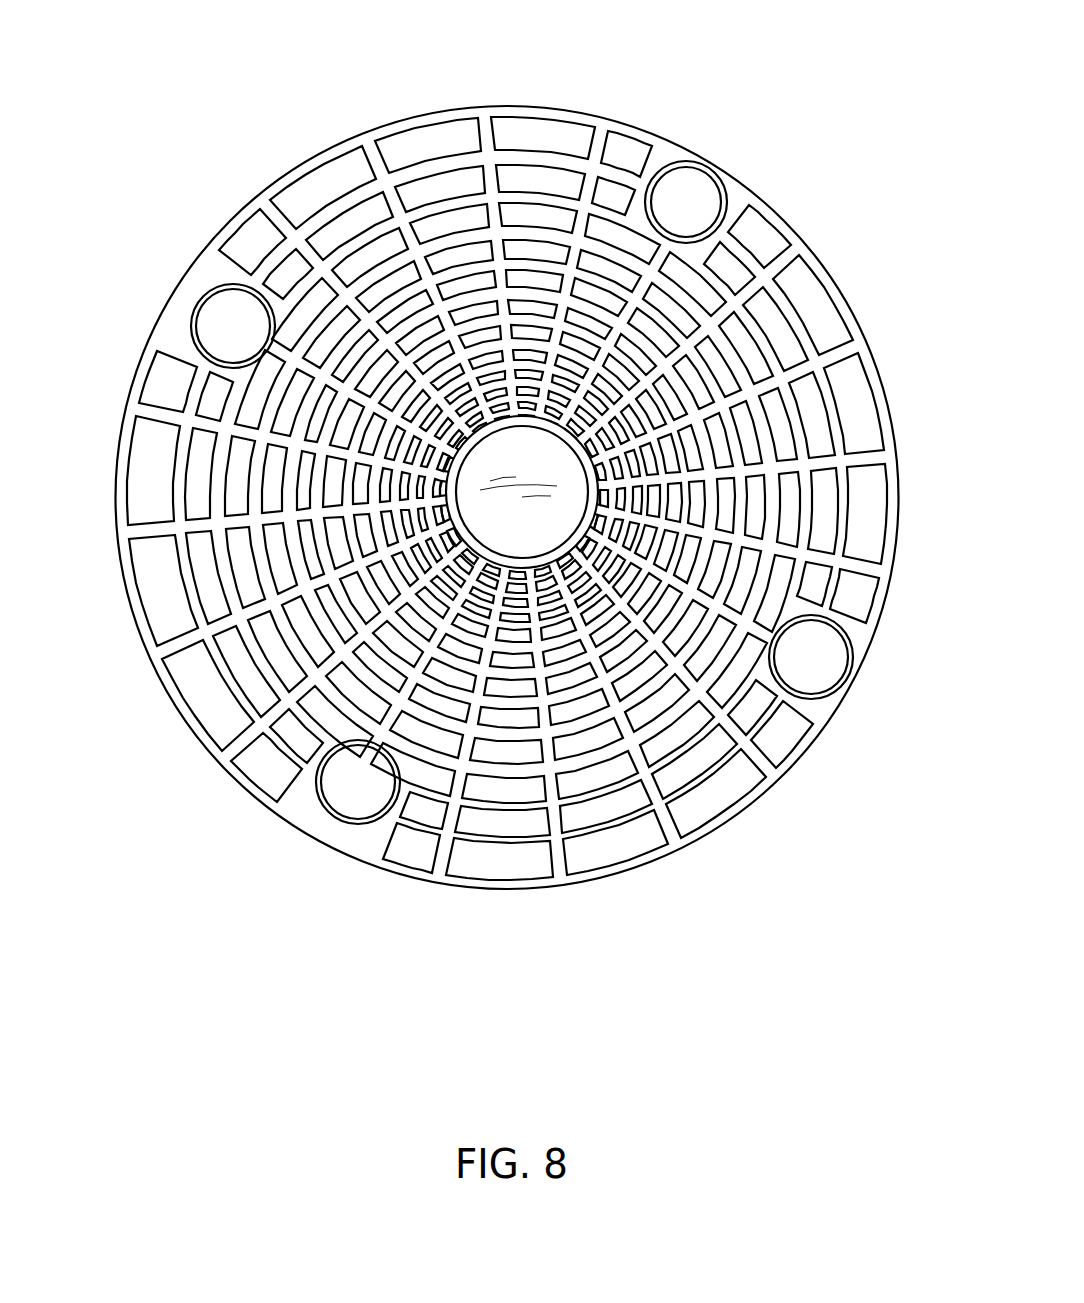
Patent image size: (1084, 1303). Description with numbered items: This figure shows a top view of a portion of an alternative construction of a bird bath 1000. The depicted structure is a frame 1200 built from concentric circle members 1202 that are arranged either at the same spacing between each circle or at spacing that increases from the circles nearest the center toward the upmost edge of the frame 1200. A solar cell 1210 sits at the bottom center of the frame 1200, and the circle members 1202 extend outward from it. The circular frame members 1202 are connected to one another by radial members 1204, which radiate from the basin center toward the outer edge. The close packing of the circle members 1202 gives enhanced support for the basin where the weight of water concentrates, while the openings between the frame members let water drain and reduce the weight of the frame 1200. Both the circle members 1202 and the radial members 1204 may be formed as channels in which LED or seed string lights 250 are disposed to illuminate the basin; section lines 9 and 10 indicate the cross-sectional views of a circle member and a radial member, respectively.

The bird bath 1000 is at (732, 77).
The frame 1200 is at (757, 192).
The solar cell 1210 is at (537, 478).
The concentric circle members 1202 is at (833, 412).
The radial members 1204 is at (458, 820).
The LED lights 250 is at (623, 873).
The section line 9- 9 is at (515, 45).
The section line 10- 10 is at (318, 152).